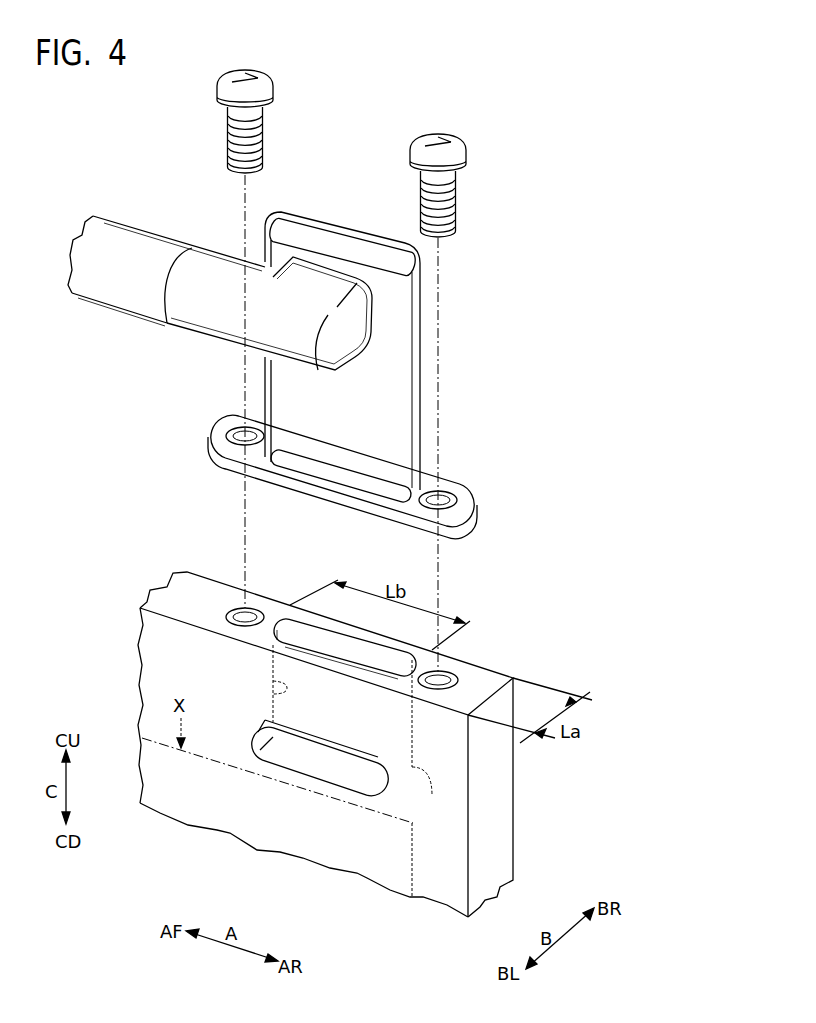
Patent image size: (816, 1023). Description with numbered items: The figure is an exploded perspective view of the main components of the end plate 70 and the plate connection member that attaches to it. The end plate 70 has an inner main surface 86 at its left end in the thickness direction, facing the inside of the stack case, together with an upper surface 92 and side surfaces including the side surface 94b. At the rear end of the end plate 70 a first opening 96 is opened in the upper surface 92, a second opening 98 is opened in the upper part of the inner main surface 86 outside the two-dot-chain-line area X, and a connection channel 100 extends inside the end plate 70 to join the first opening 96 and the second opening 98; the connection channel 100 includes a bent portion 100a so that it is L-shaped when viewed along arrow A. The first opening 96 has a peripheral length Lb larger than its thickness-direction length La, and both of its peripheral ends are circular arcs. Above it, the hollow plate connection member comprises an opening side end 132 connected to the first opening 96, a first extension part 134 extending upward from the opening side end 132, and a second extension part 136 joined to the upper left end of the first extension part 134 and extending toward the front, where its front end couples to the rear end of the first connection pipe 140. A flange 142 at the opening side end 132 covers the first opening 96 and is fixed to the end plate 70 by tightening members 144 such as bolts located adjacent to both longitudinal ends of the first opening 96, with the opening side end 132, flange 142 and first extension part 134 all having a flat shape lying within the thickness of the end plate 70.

The end plate 70 is at (349, 730).
The inner main surface 86 is at (349, 730).
The upper surface 92 is at (177, 592).
The side surface 94b is at (500, 790).
The first opening 96 is at (366, 668).
The second opening 98 is at (315, 768).
The connection channel 100 is at (272, 692).
The bent portion 100a is at (436, 778).
The opening side end 132 is at (351, 483).
The first extension part 134 is at (397, 345).
The second extension part 136 is at (200, 318).
The first connection pipe 140 is at (120, 295).
The flange 142 is at (462, 497).
The tightening members 144 is at (458, 152).